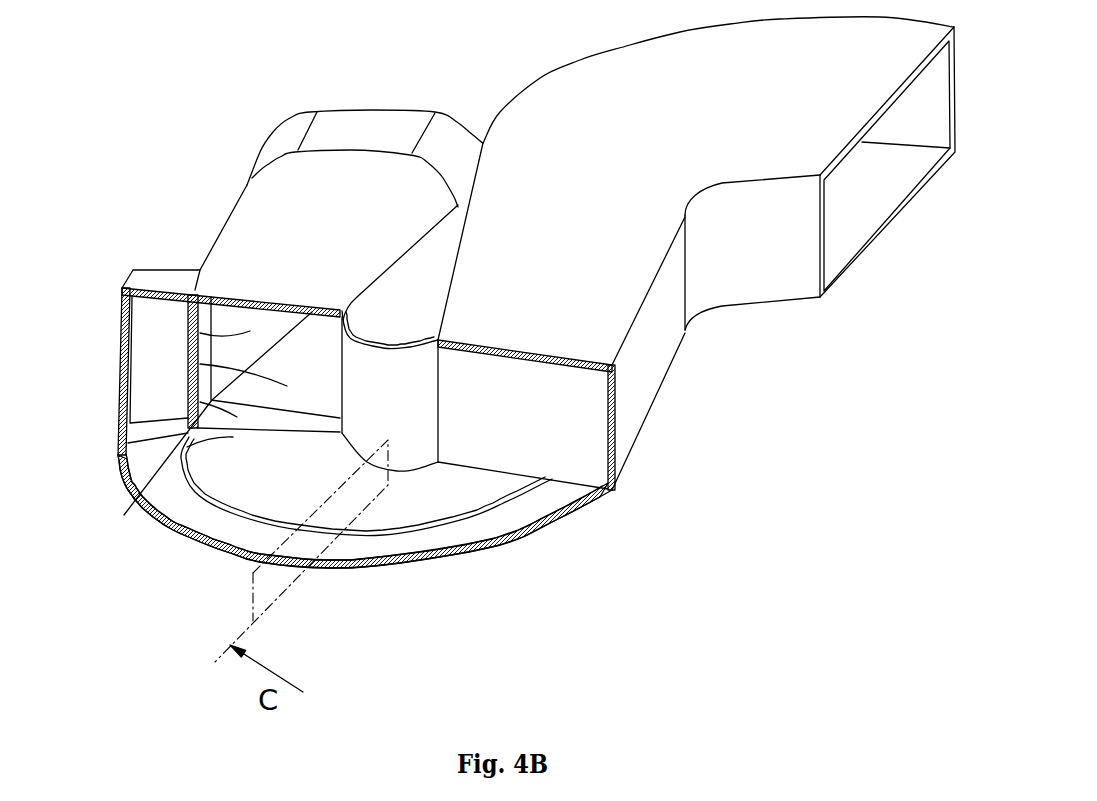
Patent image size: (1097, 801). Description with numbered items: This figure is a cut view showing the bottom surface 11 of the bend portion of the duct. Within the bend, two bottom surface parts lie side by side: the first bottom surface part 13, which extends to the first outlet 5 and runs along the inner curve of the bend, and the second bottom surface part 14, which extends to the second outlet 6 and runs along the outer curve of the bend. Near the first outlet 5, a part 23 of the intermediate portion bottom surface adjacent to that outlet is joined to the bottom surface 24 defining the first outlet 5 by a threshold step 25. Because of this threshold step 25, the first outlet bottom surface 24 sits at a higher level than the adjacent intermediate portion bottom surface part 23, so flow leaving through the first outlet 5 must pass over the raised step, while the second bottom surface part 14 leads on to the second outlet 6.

The first outlet 5 is at (187, 332).
The second outlet 6 is at (163, 343).
The first outlet bottom surface 24 is at (187, 364).
The threshold step 25 is at (187, 399).
The part of the intermediate portion bottom surface 23 is at (128, 506).
The second bottom surface part 14 is at (182, 505).
The bottom surface 11 is at (187, 543).
The first bottom surface part 13 is at (437, 490).